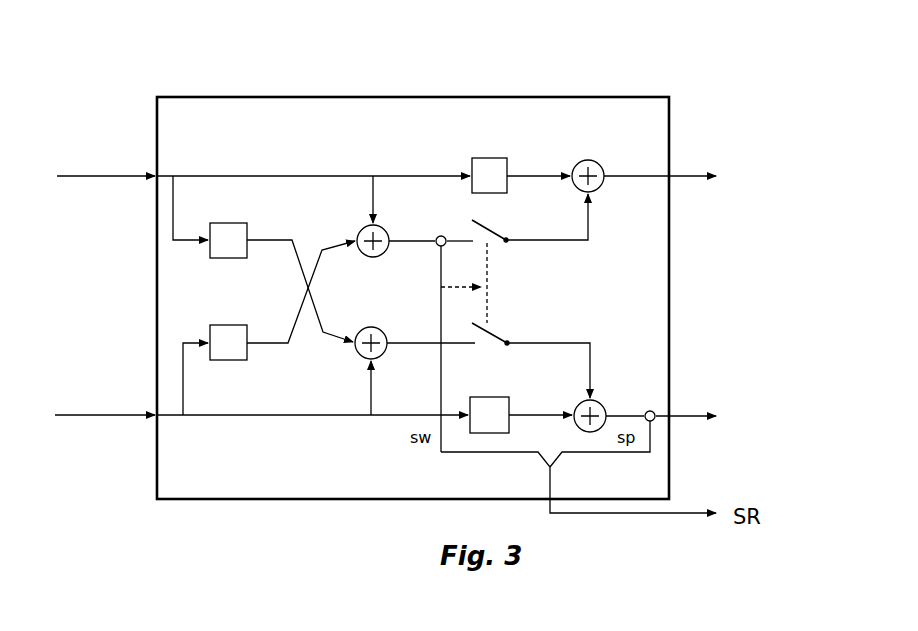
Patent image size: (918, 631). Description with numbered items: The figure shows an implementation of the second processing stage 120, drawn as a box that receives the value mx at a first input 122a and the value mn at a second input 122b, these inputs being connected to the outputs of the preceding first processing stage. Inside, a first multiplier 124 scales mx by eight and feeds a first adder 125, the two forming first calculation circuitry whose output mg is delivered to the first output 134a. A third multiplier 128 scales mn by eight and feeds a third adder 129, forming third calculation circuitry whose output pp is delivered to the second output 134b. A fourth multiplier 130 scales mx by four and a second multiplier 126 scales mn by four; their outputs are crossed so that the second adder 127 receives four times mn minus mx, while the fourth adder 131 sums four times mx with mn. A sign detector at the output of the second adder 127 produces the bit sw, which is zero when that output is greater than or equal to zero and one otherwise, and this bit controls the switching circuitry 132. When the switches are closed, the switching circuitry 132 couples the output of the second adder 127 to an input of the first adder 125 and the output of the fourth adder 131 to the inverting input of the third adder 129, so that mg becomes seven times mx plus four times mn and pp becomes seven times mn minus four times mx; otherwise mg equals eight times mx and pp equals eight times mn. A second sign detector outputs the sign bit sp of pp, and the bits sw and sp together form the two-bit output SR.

The second processing stage 120 is at (199, 50).
The first input 122a is at (150, 193).
The second input 122b is at (150, 430).
The first multiplier 124 is at (488, 158).
The first adder 125 is at (583, 160).
The second multiplier 126 is at (247, 360).
The second adder 127 is at (385, 255).
The third multiplier 128 is at (490, 397).
The third adder 129 is at (577, 401).
The fourth multiplier 130 is at (232, 223).
The fourth adder 131 is at (386, 356).
The switching circuitry 132 is at (582, 290).
The first output 134a is at (682, 162).
The second output 134b is at (682, 405).